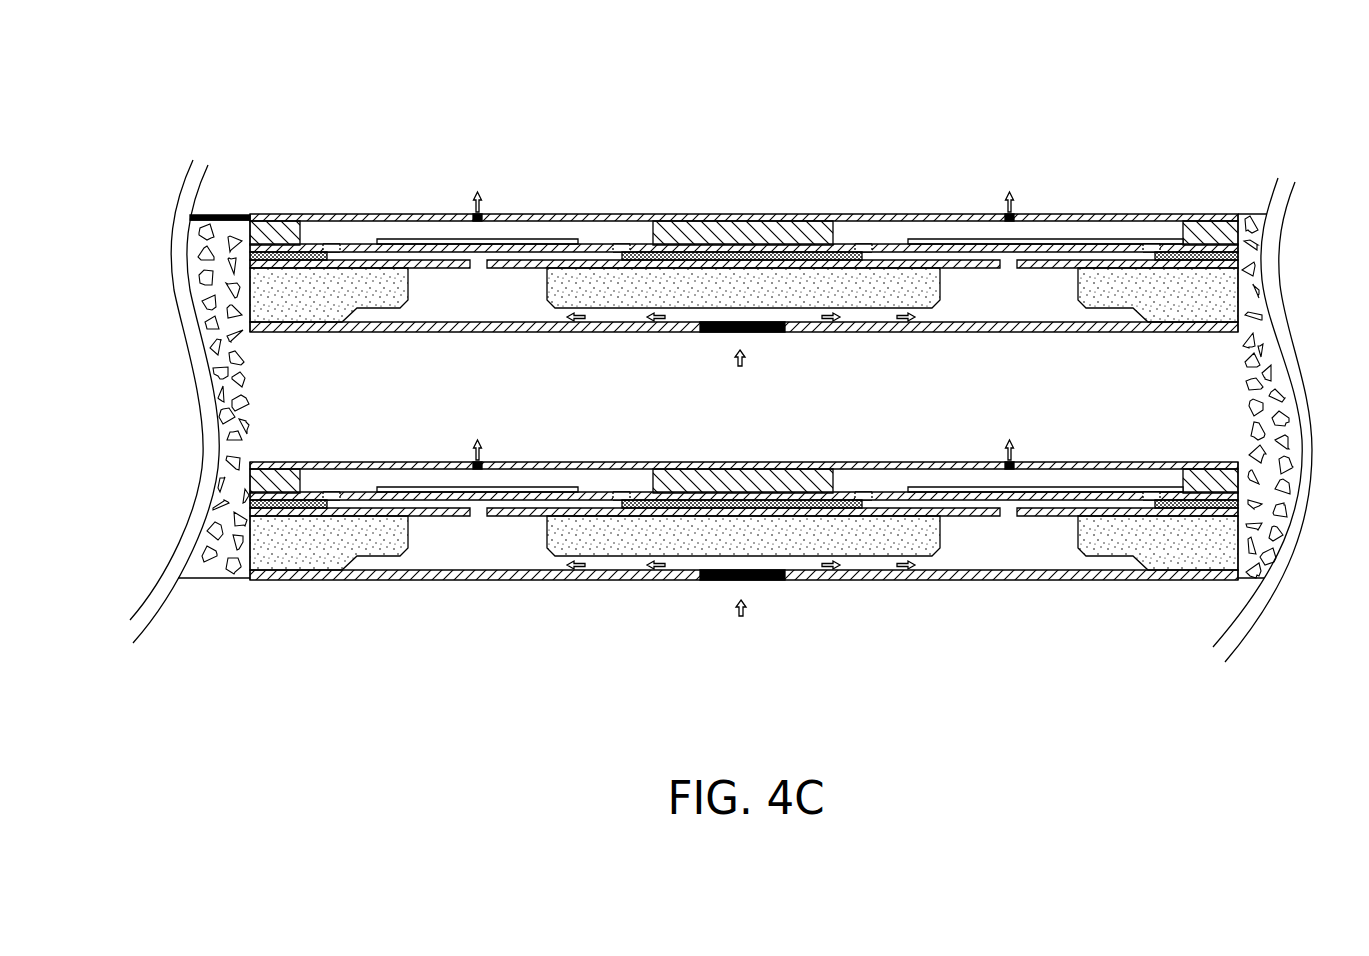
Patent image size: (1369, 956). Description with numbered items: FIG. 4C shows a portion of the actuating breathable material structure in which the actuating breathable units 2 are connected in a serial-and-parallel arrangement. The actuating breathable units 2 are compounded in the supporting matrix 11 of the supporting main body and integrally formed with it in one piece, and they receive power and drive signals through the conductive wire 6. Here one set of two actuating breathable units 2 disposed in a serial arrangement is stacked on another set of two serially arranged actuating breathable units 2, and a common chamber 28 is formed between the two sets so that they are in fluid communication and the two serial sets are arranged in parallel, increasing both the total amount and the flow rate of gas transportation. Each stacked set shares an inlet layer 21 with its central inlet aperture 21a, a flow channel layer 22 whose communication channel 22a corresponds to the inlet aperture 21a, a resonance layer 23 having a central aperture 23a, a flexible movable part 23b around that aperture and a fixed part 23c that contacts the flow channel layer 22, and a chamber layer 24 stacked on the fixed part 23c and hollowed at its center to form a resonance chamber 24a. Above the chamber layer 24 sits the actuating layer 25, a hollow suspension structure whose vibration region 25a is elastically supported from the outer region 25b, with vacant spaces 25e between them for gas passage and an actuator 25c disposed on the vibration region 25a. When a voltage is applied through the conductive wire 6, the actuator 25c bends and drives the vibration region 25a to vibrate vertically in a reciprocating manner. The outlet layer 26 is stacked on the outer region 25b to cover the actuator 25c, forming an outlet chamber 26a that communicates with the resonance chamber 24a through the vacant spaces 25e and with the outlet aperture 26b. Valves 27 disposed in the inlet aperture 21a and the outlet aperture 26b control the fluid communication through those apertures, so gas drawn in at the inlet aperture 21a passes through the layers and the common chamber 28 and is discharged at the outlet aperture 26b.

The actuating breathable unit 2 is at (288, 116).
The conductive wire 6 is at (208, 213).
The supporting matrix 11 is at (232, 213).
The inlet layer 21 is at (300, 343).
The inlet aperture 21a is at (735, 333).
The flow channel layer 22 is at (369, 556).
The communication channel 22a is at (493, 295).
The resonance layer 23 is at (613, 262).
The central aperture 23a is at (480, 517).
The movable part 23b is at (432, 518).
The fixed part 23c is at (268, 512).
The chamber layer 24 is at (250, 262).
The resonance chamber 24a is at (530, 256).
The actuating layer 25 is at (255, 250).
The vibration region 25a is at (575, 498).
The outer region 25b is at (275, 233).
The actuator 25c is at (445, 248).
The vacant space 25e is at (331, 246).
The outlet layer 26 is at (1253, 222).
The outlet chamber 26a is at (420, 241).
The outlet aperture 26b is at (482, 198).
The valve 27 is at (474, 212).
The common chamber 28 is at (245, 446).